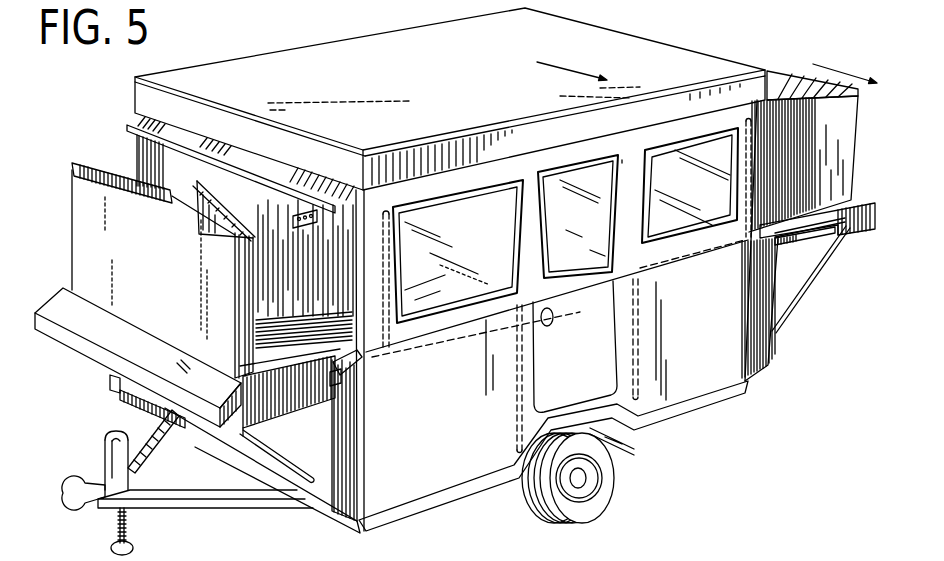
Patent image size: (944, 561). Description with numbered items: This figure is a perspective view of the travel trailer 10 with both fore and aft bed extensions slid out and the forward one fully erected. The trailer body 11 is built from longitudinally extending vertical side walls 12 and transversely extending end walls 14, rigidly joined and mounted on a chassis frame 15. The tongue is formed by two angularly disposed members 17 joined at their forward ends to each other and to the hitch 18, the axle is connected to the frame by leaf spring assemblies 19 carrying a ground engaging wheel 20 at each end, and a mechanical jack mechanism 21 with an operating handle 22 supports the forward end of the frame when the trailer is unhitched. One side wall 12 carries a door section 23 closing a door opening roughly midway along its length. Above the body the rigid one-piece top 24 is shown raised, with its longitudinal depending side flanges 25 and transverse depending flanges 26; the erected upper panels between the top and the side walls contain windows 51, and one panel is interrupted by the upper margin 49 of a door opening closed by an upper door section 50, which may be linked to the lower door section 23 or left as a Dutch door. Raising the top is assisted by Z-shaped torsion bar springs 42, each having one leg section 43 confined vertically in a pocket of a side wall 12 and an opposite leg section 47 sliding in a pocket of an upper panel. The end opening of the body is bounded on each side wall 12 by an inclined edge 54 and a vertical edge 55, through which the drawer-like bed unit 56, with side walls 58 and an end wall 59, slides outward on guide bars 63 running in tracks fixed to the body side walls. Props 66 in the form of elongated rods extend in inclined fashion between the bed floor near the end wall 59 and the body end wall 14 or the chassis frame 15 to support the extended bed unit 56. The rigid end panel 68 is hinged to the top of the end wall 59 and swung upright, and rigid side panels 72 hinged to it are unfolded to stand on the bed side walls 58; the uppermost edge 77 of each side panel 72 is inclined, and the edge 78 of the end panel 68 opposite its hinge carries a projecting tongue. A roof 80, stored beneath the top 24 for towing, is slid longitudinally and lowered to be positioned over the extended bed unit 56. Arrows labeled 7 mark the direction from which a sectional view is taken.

The section line for FIG. 7 is at (695, 59).
The travel trailer 10 is at (410, 75).
The body 11 is at (767, 368).
The side walls 12 is at (694, 386).
The end walls 14 is at (298, 455).
The chassis frame 15 is at (432, 508).
The angularly disposed members 17 is at (205, 502).
The hitch 18 is at (73, 500).
The leaf spring assemblies 19 is at (621, 443).
The ground engaging wheel 20 is at (600, 496).
The mechanical jack mechanism 21 is at (110, 461).
The operating handle 22 is at (104, 448).
The door section 23 is at (592, 360).
The one-piece top 24 is at (313, 68).
The side flanges 25 is at (530, 137).
The transverse depending flanges 26 is at (320, 155).
The torsion bar springs 42 is at (637, 335).
The leg section 43 is at (515, 395).
The leg section 47 is at (390, 273).
The upper margin of door opening 49 is at (540, 210).
The door section 50 is at (620, 155).
The windows 51 is at (455, 223).
The inclined edge 54 is at (355, 366).
The vertical edge 55 is at (336, 392).
The bed unit 56 is at (97, 367).
The side walls 58 is at (343, 410).
The end wall 59 is at (92, 330).
The guide bar 63 is at (303, 423).
The props 66 is at (256, 462).
The end panel 68 is at (93, 257).
The side panels 72 is at (110, 166).
The edge 77 is at (190, 200).
The edge 78 is at (133, 200).
The roof 80 is at (191, 146).